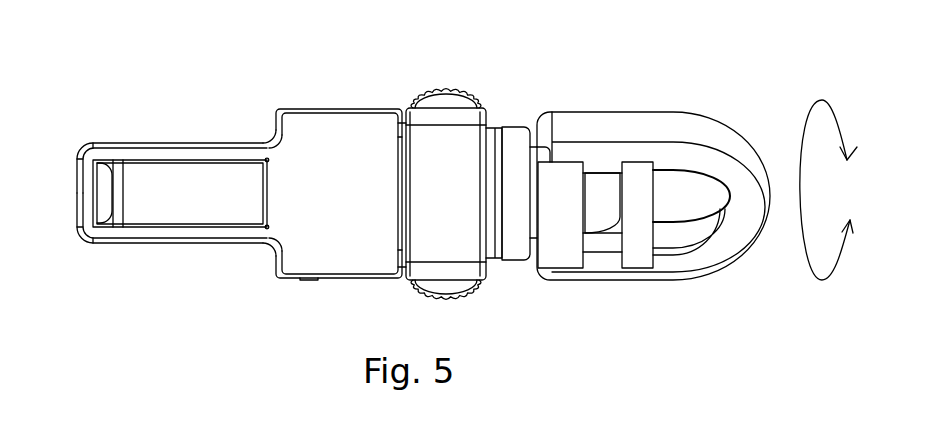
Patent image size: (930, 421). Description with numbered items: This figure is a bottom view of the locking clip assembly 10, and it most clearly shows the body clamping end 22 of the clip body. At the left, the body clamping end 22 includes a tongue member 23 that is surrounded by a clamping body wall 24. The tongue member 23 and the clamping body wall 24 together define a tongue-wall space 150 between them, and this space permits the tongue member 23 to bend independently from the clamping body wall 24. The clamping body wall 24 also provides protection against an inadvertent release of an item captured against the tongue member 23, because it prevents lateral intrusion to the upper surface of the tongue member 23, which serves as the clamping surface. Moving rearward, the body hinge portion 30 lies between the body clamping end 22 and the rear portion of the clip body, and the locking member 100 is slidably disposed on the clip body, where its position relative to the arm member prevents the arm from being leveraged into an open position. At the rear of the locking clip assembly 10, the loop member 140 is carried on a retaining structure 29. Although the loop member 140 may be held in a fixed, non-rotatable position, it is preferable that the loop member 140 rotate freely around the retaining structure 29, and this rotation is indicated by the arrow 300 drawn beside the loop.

The locking clip assembly 10 is at (232, 100).
The body clamping end 22 is at (133, 142).
The tongue member 23 is at (181, 193).
The clamping body wall 24 is at (190, 242).
The retaining structure 29 is at (600, 192).
The body hinge portion 30 is at (341, 194).
The locking member 100 is at (471, 194).
The loop member 140 is at (698, 112).
The tongue-wall space 150 is at (140, 227).
The arrow 300 is at (835, 103).